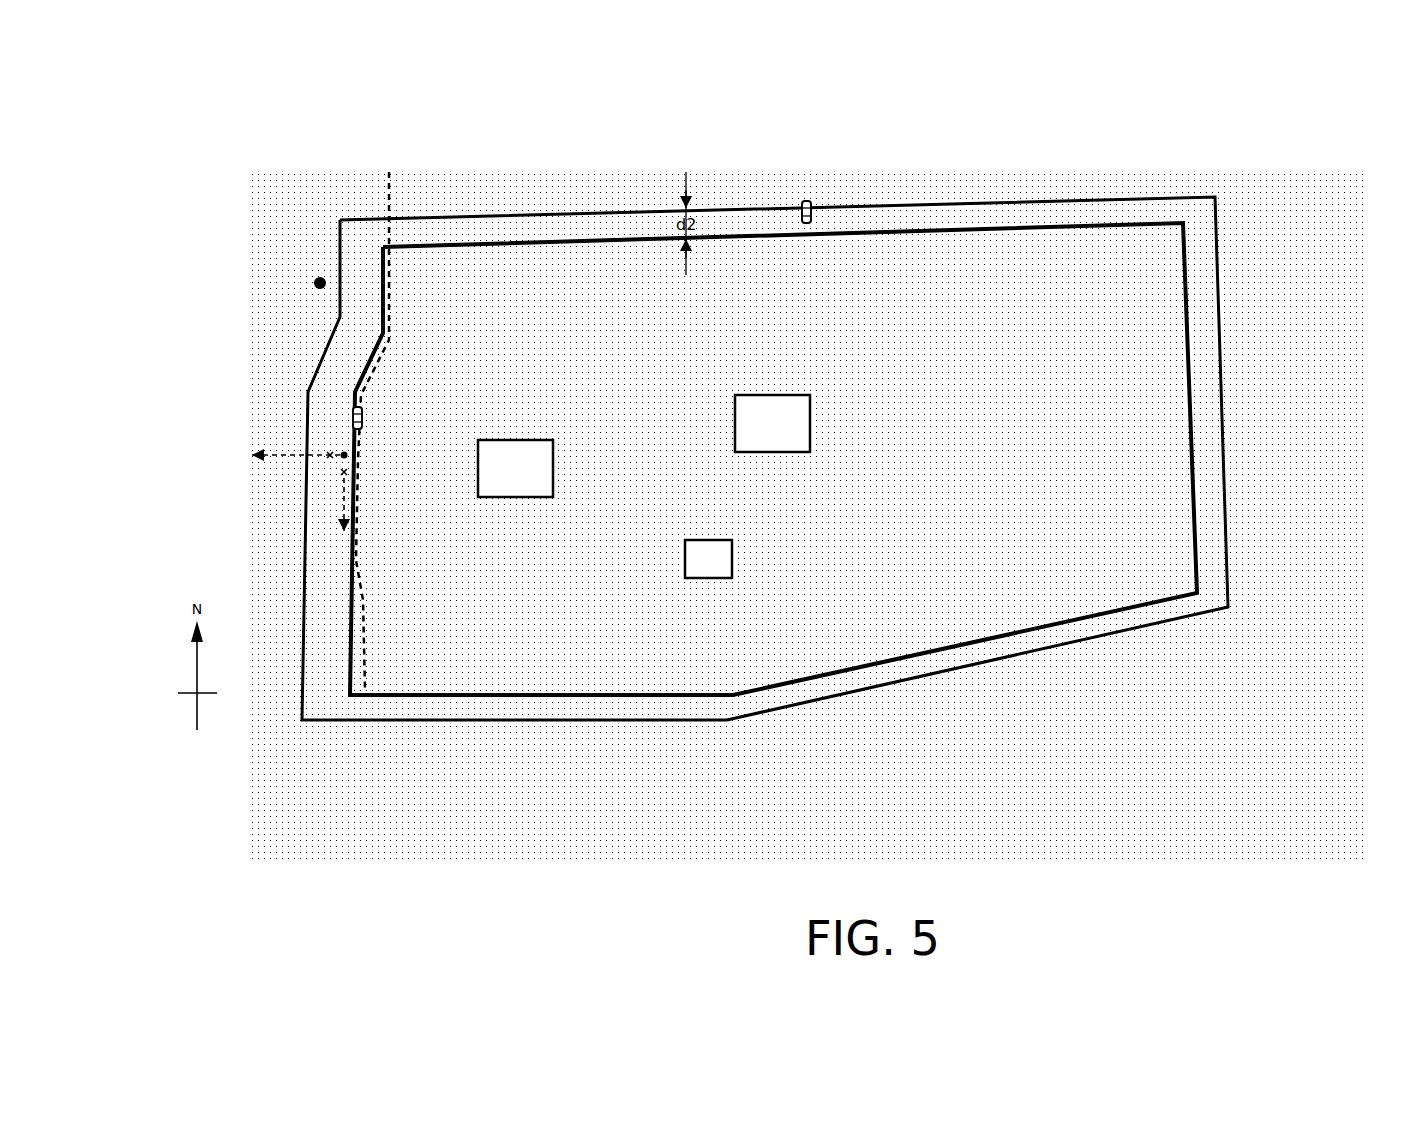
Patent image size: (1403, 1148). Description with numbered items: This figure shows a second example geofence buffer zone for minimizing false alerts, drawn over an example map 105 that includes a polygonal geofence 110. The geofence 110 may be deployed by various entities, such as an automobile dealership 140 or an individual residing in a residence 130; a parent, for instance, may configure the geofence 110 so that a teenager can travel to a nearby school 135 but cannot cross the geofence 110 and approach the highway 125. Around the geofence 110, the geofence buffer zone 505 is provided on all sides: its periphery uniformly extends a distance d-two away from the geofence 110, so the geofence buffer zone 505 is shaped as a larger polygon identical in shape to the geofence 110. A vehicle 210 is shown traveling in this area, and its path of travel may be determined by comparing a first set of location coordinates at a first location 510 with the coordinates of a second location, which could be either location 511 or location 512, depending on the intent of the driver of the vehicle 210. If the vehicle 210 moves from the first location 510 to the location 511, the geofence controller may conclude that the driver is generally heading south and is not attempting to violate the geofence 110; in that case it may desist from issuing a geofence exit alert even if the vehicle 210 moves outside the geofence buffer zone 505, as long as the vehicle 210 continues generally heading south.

The map 105 is at (1320, 152).
The geofence 110 is at (950, 247).
The highway 125 is at (322, 262).
The residence 130 is at (708, 559).
The school 135 is at (515, 468).
The automobile dealership 140 is at (772, 423).
The vehicle 210 is at (822, 206).
The geofence buffer zone 505 is at (765, 446).
The first location 510 is at (343, 444).
The location 511 is at (335, 479).
The location 512 is at (323, 446).